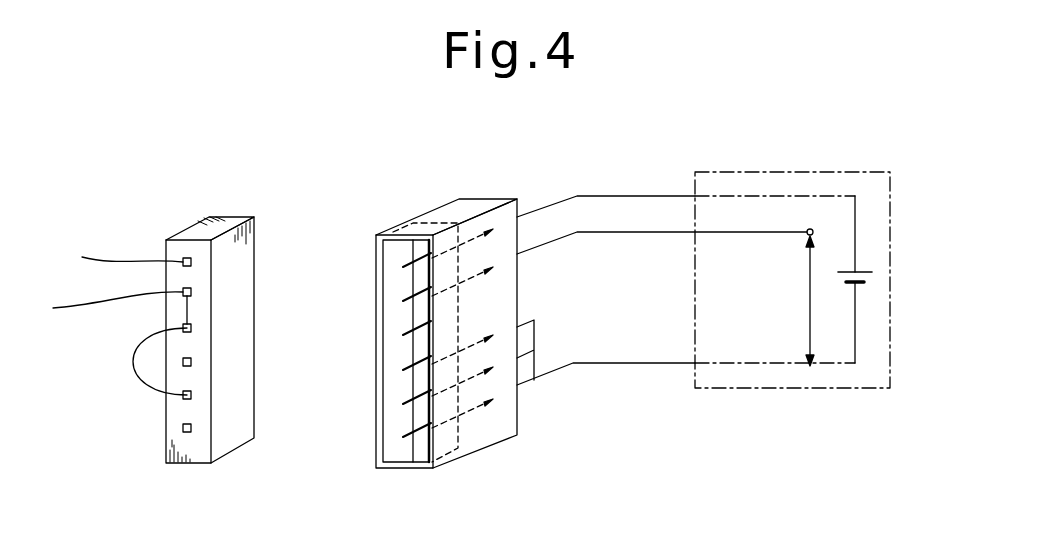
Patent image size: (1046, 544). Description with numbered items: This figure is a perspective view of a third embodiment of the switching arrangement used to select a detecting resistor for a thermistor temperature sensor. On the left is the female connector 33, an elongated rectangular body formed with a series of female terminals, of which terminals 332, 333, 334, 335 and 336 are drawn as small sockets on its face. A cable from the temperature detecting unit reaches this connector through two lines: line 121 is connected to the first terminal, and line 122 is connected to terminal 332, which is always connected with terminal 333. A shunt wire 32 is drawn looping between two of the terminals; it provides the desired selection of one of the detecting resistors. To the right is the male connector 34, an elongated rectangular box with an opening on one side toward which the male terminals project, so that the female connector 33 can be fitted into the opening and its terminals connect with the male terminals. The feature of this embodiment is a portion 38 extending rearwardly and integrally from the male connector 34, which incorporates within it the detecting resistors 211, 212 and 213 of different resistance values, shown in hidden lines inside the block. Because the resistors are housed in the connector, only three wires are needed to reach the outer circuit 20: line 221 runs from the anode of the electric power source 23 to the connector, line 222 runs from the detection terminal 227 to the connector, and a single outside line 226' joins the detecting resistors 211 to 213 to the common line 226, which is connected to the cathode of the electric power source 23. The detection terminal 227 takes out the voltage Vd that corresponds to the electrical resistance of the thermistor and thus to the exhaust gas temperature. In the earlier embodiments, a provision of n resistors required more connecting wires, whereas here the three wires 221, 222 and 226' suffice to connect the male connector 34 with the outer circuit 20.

The female connector 33 is at (215, 200).
The line 121 is at (107, 257).
The line 122 is at (93, 308).
The shunt wire 32 is at (130, 380).
The female terminal 332 is at (192, 292).
The female terminal 333 is at (192, 328).
The female terminal 334 is at (192, 362).
The female terminal 335 is at (192, 395).
The female terminal 336 is at (192, 428).
The rearwardly extended portion 38 is at (477, 178).
The male connector 34 is at (390, 236).
The detecting resistor 211 is at (480, 340).
The detecting resistor 212 is at (480, 370).
The detecting resistor 213 is at (482, 400).
The outer circuit 20 is at (828, 172).
The line 221 is at (648, 196).
The line 222 is at (676, 232).
The detection terminal 227 is at (808, 228).
The outside line 226' is at (606, 400).
The common line 226 is at (775, 360).
The electric power source 23 is at (872, 284).